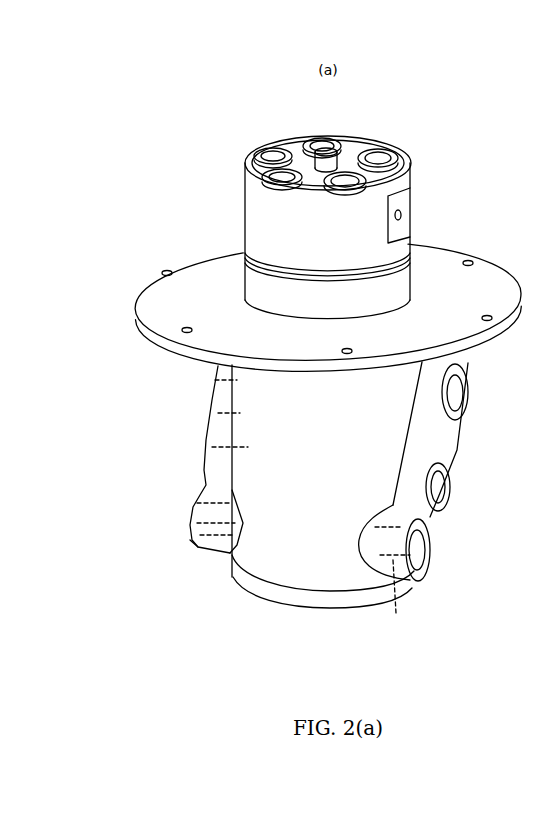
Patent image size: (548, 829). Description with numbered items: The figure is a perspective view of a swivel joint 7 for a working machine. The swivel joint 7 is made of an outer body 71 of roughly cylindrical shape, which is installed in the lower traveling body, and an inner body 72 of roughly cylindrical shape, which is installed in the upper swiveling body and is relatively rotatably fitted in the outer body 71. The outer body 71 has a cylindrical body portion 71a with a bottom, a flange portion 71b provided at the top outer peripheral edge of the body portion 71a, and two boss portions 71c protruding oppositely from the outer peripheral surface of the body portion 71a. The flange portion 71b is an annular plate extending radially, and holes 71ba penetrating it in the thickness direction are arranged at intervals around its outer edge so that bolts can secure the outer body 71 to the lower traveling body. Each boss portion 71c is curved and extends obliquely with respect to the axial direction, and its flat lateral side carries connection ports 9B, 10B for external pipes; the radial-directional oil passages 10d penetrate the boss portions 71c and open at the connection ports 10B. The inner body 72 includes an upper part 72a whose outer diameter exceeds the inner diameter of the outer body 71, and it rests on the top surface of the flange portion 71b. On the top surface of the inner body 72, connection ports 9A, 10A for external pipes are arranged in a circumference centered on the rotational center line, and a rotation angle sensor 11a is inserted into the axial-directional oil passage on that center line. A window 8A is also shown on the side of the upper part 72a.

The swivel joint 7 is at (398, 134).
The inner body 72 is at (241, 212).
The upper part of the inner body 72a is at (425, 282).
The window 8A is at (404, 211).
The rotation angle sensor 11a is at (327, 146).
The connection port 10A is at (270, 147).
The connection port 9A is at (316, 140).
The flange portion 71b is at (488, 314).
The hole 71ba is at (166, 268).
The outer body 71 is at (216, 566).
The body portion 71a is at (270, 567).
The boss portion 71c is at (210, 463).
The connection port 9B is at (205, 430).
The connection port 10B is at (193, 515).
The radial-directional oil passage 10d is at (189, 546).